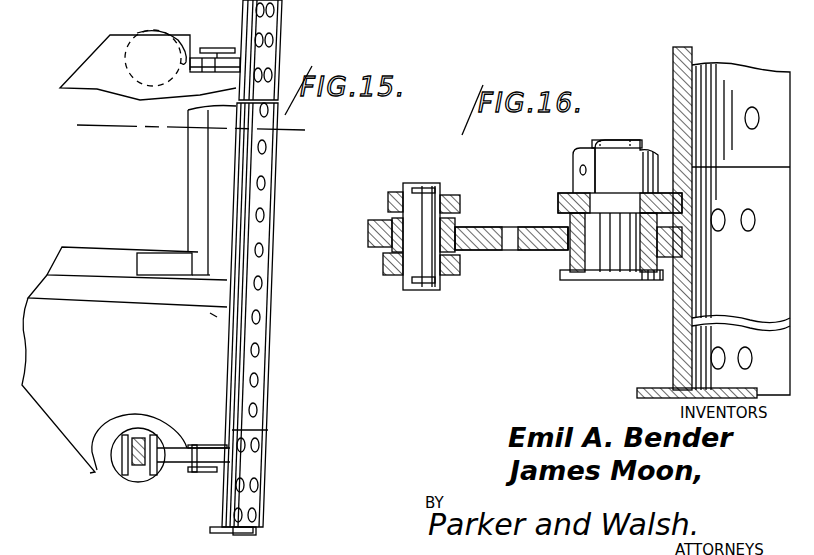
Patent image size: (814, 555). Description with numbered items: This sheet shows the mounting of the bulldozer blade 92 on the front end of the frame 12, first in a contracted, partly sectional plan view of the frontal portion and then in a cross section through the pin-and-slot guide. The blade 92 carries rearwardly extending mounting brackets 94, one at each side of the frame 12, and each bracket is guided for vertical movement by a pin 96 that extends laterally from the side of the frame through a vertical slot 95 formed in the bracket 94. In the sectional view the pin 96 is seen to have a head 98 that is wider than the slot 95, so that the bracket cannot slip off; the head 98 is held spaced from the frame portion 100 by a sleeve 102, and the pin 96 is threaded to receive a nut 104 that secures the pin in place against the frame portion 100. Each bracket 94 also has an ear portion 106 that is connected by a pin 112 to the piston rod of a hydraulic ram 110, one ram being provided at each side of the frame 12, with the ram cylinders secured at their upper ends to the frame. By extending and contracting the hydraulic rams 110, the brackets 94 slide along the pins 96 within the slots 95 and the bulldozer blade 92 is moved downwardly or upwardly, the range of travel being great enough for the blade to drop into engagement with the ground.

In FIG. 15, the frame 12 is at (65, 407).
In FIG. 15, the bulldozer blade 92 is at (263, 389).
In FIG. 16, the bulldozer blade 92 is at (737, 73).
In FIG. 16, the mounting brackets 94 is at (528, 227).
In FIG. 16, the vertical slots 95 is at (570, 242).
In FIG. 15, the pins 96 is at (220, 48).
In FIG. 16, the pins 96 is at (603, 257).
In FIG. 16, the heads 98 is at (576, 273).
In FIG. 16, the frame portions 100 is at (563, 188).
In FIG. 16, the sleeves 102 is at (650, 282).
In FIG. 16, the nuts 104 is at (610, 158).
In FIG. 15, the ear portions 106 is at (182, 55).
In FIG. 16, the ear portions 106 is at (372, 224).
In FIG. 15, the hydraulic rams 110 is at (147, 32).
In FIG. 16, the pins 112 is at (422, 185).